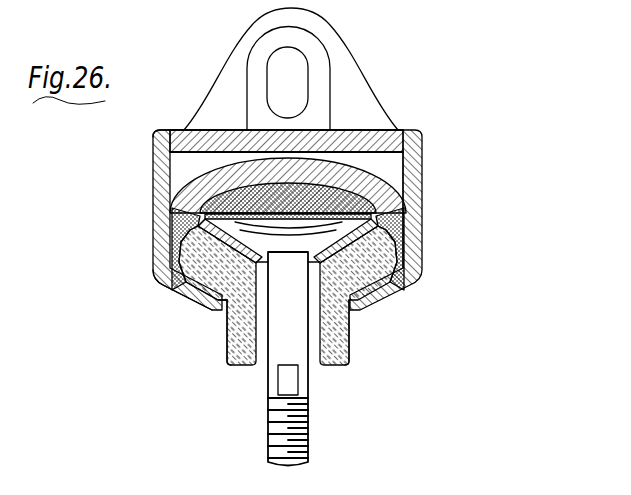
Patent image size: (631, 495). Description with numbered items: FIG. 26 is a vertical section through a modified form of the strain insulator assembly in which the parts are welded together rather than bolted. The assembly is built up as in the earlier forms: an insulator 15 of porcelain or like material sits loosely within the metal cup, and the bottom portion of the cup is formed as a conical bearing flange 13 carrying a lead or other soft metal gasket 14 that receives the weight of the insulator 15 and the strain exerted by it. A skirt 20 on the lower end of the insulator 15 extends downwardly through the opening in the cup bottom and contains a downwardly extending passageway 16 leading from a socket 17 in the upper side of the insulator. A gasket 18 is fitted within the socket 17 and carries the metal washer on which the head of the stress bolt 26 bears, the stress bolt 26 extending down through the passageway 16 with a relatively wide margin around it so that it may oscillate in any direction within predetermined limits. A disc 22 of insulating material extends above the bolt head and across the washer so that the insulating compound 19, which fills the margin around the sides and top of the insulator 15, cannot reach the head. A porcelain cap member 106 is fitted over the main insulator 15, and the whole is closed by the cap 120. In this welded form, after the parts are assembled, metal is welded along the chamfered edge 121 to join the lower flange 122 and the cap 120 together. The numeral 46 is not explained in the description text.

The cap 120 is at (365, 137).
The chamfered edge 121 is at (400, 133).
The lower flange 122 is at (423, 150).
The porcelain cap member 106 is at (408, 203).
The gasket 18 is at (412, 231).
The insulating compound 19 is at (170, 197).
The disc 22 is at (175, 232).
The socket 17 is at (165, 285).
The conical bearing flange 13 is at (378, 306).
The gasket 14 is at (205, 303).
The insulator 15 is at (352, 313).
The skirt 20 is at (349, 362).
The passageway 16 is at (248, 368).
The stress bolt 26 is at (298, 345).
The keyway 46 is at (290, 382).